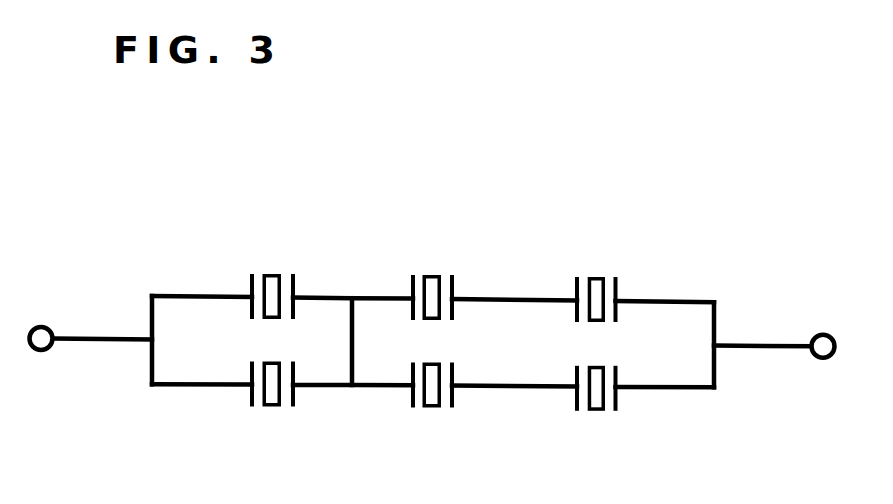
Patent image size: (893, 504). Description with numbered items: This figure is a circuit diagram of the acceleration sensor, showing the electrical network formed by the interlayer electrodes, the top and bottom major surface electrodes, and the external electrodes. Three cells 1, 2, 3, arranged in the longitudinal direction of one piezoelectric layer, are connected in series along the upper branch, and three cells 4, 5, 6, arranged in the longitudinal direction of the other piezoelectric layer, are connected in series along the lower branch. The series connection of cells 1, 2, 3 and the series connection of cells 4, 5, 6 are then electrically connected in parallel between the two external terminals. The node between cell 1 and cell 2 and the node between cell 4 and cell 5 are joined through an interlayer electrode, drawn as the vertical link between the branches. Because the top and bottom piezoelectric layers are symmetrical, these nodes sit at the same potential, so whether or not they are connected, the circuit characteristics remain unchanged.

The cell 1 is at (272, 271).
The cell 2 is at (432, 269).
The cell 3 is at (596, 271).
The cell 4 is at (272, 414).
The cell 5 is at (432, 414).
The cell 6 is at (596, 419).